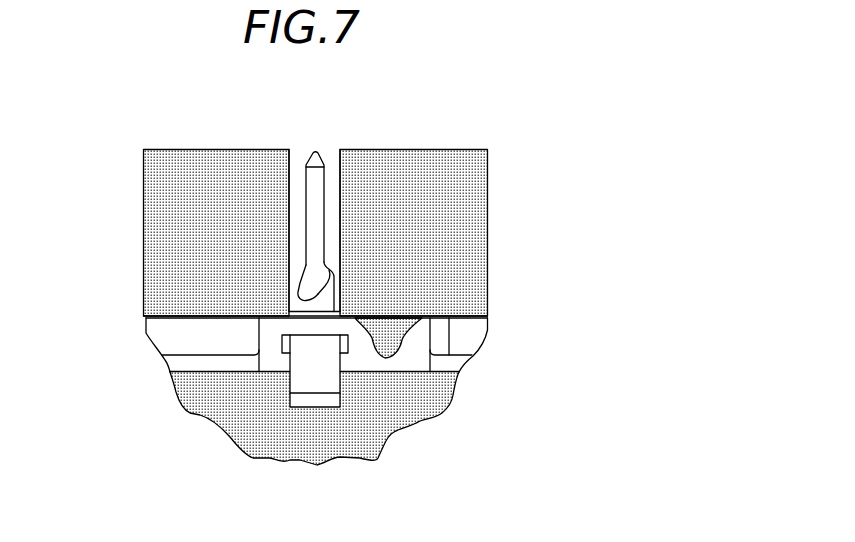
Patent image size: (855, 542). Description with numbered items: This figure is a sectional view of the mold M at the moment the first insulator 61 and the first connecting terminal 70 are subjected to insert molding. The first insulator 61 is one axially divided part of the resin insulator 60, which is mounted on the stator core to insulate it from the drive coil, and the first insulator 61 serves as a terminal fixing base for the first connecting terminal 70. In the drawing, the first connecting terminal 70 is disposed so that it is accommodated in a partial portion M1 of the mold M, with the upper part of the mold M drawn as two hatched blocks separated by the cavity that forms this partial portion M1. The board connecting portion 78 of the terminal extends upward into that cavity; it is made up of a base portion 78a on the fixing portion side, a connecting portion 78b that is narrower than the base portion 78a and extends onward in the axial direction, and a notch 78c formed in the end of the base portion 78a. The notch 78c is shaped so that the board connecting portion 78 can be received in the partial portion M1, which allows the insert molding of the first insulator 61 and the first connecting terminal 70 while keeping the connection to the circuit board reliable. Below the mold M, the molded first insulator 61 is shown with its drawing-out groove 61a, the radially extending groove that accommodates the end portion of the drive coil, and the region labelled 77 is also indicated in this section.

The board connecting portion 78 is at (244, 189).
The base portion 78a is at (291, 301).
The connecting portion 78b is at (309, 181).
The notch 78c is at (298, 290).
The mold M is at (489, 227).
The partial portion M1 is at (332, 177).
The first insulator 61 is at (259, 410).
The insulator 60 is at (259, 410).
The drawing-out groove 61a is at (392, 356).
The first connecting terminal 70 is at (351, 416).
The terminal insertion hole 77 is at (316, 407).